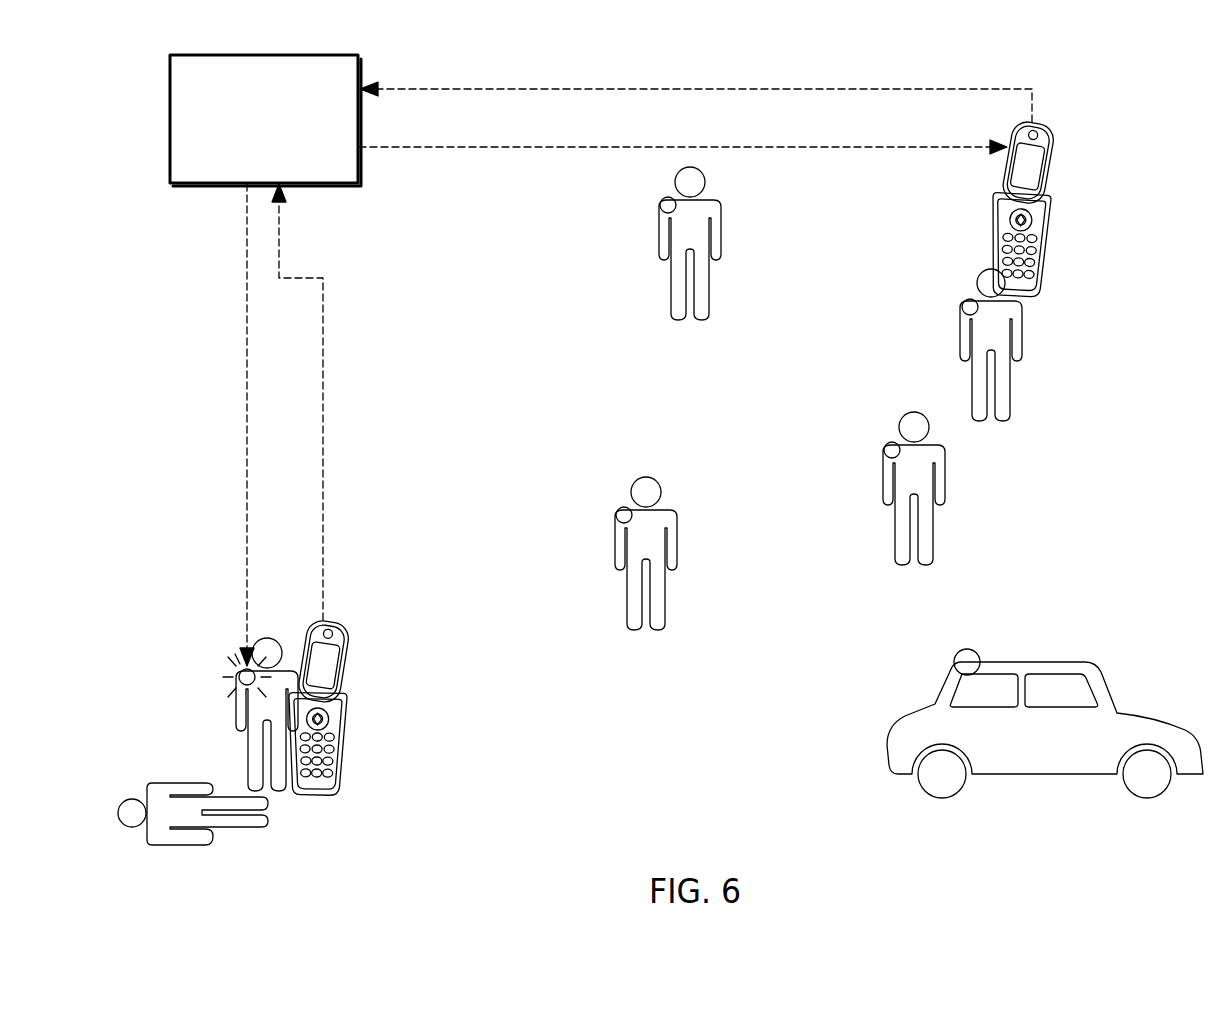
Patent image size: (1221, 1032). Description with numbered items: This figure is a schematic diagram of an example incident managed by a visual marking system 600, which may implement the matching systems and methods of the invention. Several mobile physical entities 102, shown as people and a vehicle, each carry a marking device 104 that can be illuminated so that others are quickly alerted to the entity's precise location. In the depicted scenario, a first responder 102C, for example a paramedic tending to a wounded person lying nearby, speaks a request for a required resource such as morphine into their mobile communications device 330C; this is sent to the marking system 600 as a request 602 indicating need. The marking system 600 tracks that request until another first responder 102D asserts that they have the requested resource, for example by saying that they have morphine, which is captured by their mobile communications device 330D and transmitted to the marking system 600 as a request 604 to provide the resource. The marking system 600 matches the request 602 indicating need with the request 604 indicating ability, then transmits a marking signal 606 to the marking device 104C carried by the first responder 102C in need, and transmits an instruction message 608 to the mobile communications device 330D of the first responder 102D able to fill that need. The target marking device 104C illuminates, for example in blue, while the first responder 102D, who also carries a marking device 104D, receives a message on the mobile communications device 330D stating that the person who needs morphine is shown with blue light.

The visual marking system 600 is at (170, 113).
The request 602 is at (322, 447).
The request to provide the resource 604 is at (694, 89).
The marking signal 606 is at (245, 420).
The instruction message 608 is at (682, 147).
The mobile physical entity 102 is at (721, 208).
The marking device 104 is at (660, 205).
The first responder 102C is at (253, 753).
The marking device 104C is at (221, 670).
The mobile communications device 330C is at (352, 661).
The first responder 102D is at (1024, 312).
The marking device 104D is at (946, 304).
The mobile communications device 330D is at (1053, 168).